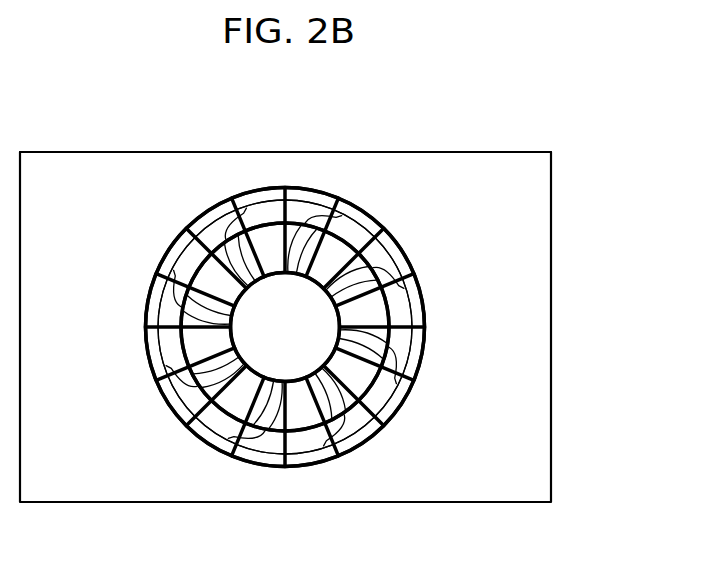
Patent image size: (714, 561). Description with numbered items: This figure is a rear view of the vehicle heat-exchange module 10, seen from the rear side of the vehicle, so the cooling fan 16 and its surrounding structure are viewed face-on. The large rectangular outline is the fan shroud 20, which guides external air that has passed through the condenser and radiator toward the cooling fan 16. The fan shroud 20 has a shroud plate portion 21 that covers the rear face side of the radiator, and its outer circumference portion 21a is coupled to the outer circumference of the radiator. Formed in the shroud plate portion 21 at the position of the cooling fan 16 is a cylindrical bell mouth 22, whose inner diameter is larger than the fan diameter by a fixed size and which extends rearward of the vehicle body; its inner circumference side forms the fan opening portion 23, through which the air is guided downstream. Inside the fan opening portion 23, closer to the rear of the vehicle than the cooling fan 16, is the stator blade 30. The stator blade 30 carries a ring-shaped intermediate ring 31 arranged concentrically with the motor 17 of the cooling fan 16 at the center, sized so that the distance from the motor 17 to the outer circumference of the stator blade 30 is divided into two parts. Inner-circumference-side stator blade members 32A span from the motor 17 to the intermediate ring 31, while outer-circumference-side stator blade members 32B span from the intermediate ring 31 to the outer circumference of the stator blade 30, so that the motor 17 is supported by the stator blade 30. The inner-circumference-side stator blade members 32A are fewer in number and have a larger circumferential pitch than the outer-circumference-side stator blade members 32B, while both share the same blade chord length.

The vehicle heat-exchange module 10 is at (336, 293).
The cooling fan 16 is at (362, 232).
The motor 17 is at (337, 288).
The fan shroud 20 is at (551, 173).
The shroud plate portion 21 is at (533, 232).
The outer circumference portion 21a is at (508, 150).
The bell mouth 22 is at (423, 308).
The fan opening portion 23 is at (414, 340).
The stator blade 30 is at (203, 237).
The intermediate ring 31 is at (270, 433).
The inner-circumference-side stator blade members 32A is at (363, 383).
The outer-circumference-side stator blade members 32B is at (160, 332).